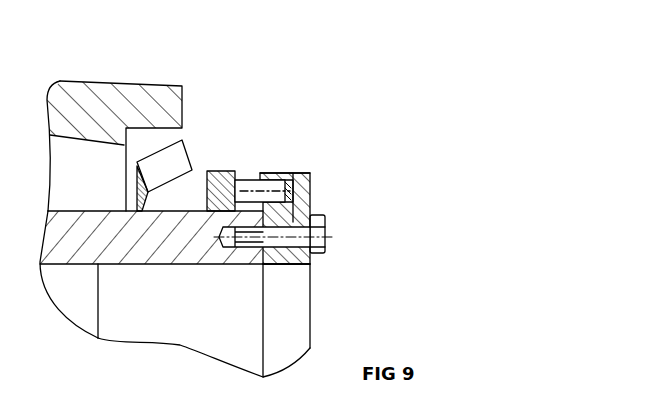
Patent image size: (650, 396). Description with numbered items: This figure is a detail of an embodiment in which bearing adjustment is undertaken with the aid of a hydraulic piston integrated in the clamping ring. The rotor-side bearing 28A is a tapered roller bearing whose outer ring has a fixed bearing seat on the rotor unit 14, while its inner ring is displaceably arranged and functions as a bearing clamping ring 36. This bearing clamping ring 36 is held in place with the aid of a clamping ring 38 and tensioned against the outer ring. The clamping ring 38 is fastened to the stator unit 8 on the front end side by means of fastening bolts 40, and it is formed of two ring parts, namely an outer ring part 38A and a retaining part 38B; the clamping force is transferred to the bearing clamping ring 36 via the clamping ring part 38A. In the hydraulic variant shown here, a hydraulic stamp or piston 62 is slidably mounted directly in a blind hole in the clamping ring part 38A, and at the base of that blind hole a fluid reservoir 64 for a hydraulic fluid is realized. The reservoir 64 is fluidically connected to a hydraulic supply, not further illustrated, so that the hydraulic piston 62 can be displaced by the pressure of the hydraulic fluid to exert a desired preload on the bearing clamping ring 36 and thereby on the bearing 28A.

The rotor unit 14 is at (78, 97).
The rotor-side bearing 28A is at (176, 169).
The bearing clamping ring 36 is at (192, 193).
The hydraulic piston 62 is at (252, 180).
The outer ring part of the clamping ring 38A is at (287, 171).
The fluid reservoir 64 is at (311, 172).
The clamping ring 38 is at (313, 209).
The fastening bolts 40 is at (323, 241).
The retaining part of the clamping ring 38B is at (311, 263).
The stator unit 8 is at (67, 252).